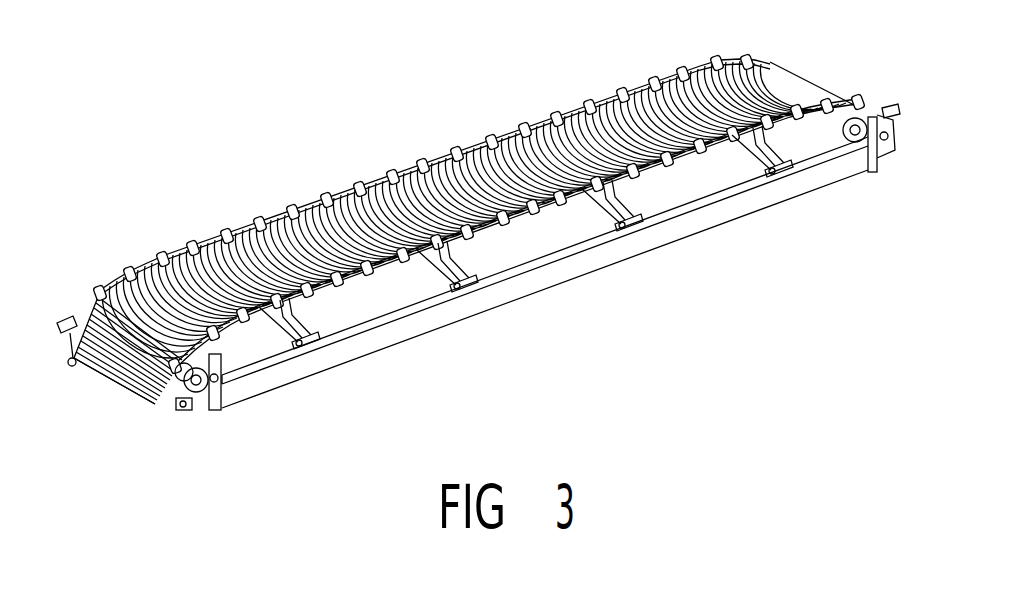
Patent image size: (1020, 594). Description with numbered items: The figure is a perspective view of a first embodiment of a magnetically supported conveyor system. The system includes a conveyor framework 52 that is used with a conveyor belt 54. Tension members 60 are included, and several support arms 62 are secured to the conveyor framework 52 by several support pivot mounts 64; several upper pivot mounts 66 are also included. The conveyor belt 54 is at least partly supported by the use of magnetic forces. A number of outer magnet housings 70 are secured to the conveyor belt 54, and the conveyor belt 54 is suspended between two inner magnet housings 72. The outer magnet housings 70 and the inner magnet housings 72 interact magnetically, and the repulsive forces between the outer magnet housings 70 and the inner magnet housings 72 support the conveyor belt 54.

The conveyor framework 52 is at (810, 190).
The conveyor belt 54 is at (110, 290).
The tension members 60 is at (284, 322).
The support arms 62 is at (760, 173).
The support pivot mounts 64 is at (618, 233).
The upper pivot mounts 66 is at (447, 267).
The outer magnet housings 70 is at (227, 233).
The inner magnet housings 72 is at (335, 192).